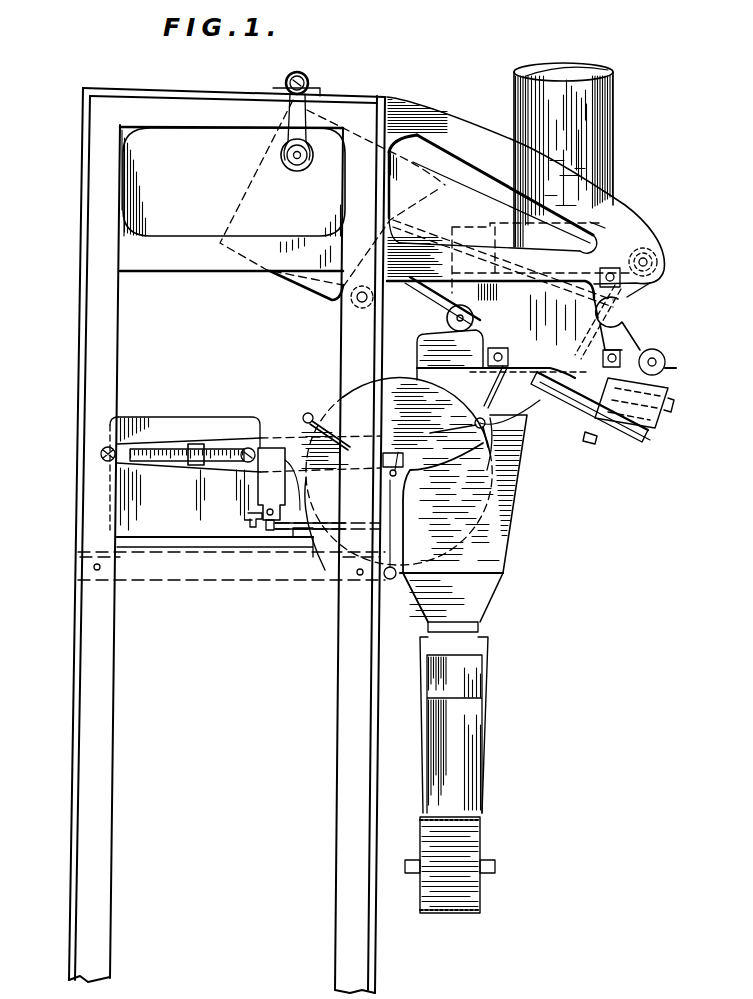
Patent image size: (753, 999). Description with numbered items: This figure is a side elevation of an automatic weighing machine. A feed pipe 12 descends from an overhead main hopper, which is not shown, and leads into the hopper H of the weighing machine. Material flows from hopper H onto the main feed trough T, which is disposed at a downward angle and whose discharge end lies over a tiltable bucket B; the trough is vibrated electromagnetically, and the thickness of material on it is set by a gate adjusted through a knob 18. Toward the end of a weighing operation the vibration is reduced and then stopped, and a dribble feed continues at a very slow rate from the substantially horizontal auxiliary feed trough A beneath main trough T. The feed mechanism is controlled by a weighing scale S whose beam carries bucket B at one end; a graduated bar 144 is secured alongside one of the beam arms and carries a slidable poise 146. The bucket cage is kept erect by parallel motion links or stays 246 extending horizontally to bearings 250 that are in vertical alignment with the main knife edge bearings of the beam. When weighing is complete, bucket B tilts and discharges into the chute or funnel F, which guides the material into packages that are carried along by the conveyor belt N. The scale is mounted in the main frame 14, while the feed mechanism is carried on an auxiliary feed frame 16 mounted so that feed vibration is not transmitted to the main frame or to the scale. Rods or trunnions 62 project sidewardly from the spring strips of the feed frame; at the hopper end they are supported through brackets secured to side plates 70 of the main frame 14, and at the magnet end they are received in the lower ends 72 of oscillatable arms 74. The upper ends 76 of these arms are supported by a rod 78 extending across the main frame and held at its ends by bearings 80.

The feed pipe 12 is at (610, 128).
The main frame 14 is at (105, 380).
The feed frame 16 is at (422, 186).
The knob 18 is at (447, 316).
The rods or trunnions 62 is at (295, 160).
The side plates 70 is at (430, 122).
The lower ends of oscillatable arms 72 is at (282, 155).
The oscillatable arms 74 is at (289, 118).
The upper ends of oscillatable arms 76 is at (298, 72).
The rod 78 is at (307, 80).
The bearings 80 is at (318, 91).
The graduated bar 144 is at (150, 460).
The slidable poise 146 is at (196, 444).
The links or stays 246 is at (290, 505).
The bearings 250 is at (255, 528).
The auxiliary feed trough A is at (490, 420).
The tiltable bucket B is at (498, 452).
The chute or funnel F is at (496, 555).
The hopper H is at (602, 222).
The conveyor belt N is at (470, 822).
The weighing scale S is at (280, 438).
The main feed trough T is at (426, 348).